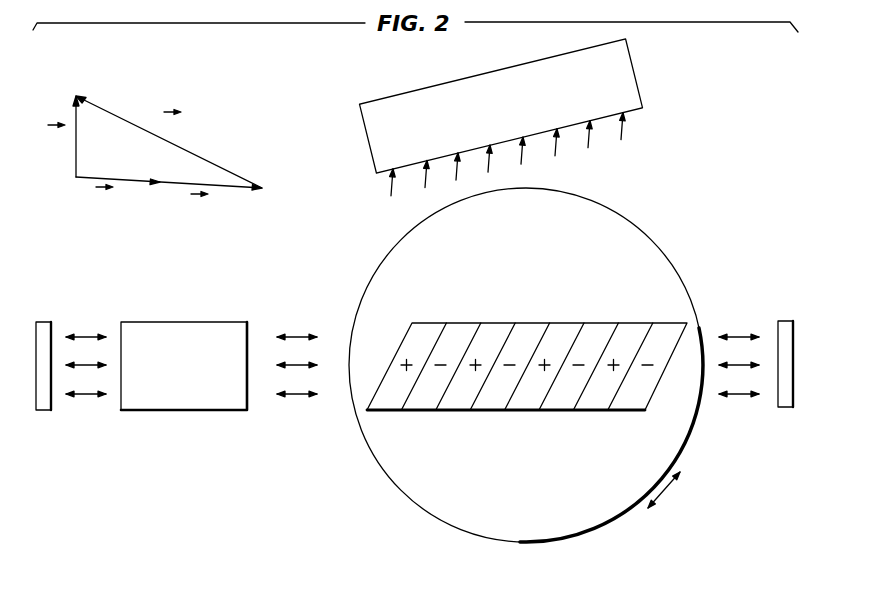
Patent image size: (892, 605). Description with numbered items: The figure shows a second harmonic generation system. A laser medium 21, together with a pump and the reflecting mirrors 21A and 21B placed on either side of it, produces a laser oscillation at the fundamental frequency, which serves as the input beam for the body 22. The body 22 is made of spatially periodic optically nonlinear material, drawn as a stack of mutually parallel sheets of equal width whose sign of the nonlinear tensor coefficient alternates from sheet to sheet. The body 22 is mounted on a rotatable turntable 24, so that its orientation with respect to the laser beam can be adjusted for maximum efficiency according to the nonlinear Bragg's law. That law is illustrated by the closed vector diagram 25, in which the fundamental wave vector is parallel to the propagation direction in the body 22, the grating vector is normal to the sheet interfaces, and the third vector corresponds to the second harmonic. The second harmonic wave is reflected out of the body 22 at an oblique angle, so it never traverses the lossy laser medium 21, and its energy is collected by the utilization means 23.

The laser medium 21 is at (175, 322).
The reflecting mirror 21A is at (41, 321).
The reflecting mirror 21B is at (783, 320).
The body 22 is at (527, 323).
The utilization means 23 is at (636, 67).
The rotatable turntable 24 is at (688, 432).
The closed vector diagram 25 is at (150, 90).